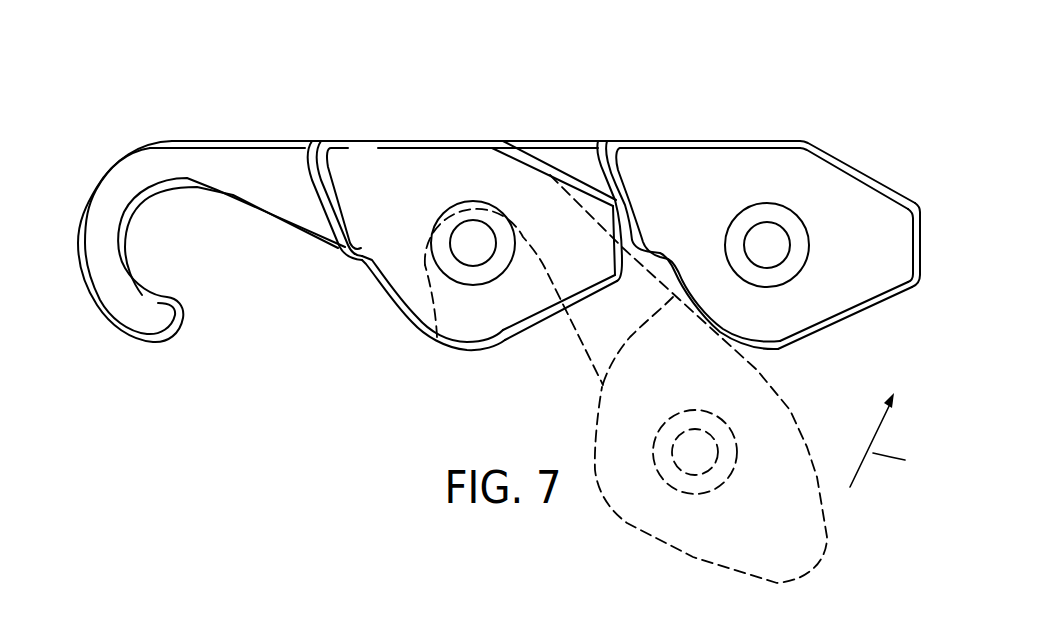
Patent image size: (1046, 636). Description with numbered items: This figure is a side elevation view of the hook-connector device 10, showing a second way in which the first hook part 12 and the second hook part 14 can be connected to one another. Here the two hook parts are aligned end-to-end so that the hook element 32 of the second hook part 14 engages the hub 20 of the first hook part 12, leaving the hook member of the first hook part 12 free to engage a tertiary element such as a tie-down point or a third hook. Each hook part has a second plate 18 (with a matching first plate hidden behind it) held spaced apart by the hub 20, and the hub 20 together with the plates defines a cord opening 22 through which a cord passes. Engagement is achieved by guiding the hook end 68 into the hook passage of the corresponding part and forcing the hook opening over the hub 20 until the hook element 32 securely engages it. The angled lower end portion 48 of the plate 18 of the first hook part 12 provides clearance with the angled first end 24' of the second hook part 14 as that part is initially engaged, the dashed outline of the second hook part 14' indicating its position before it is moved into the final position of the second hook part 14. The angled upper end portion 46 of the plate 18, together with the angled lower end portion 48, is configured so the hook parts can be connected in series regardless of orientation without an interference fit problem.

The hook-connector device 10 is at (540, 66).
The first hook part 12 is at (382, 141).
The second hook part 14 is at (763, 215).
The second hook part before being moved 14' is at (611, 379).
The second plate 18 is at (455, 155).
The hub 20 is at (478, 203).
The cord opening 22 is at (475, 255).
The angled first end of second hook part 24' is at (626, 342).
The hook element 32 is at (405, 283).
The angled upper end portion 46 is at (573, 175).
The angled lower end portion 48 is at (512, 340).
The hook end 68 is at (430, 340).